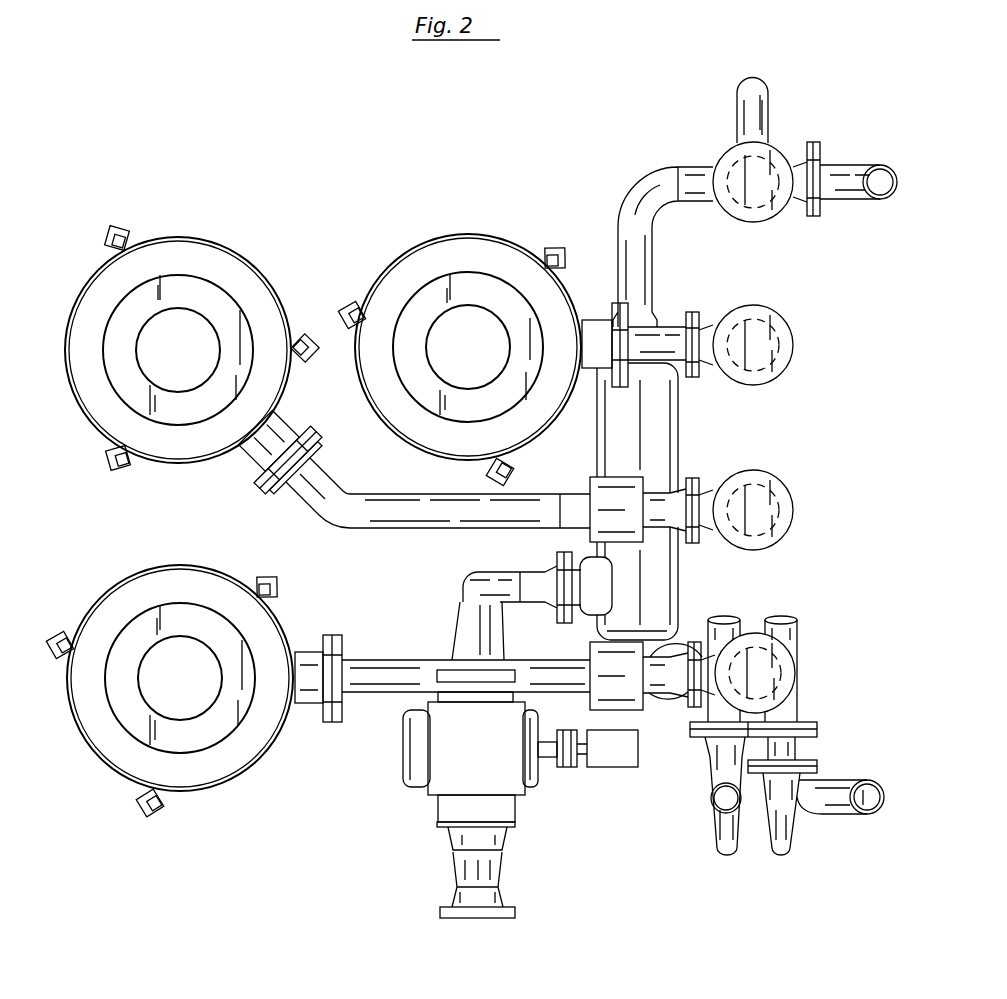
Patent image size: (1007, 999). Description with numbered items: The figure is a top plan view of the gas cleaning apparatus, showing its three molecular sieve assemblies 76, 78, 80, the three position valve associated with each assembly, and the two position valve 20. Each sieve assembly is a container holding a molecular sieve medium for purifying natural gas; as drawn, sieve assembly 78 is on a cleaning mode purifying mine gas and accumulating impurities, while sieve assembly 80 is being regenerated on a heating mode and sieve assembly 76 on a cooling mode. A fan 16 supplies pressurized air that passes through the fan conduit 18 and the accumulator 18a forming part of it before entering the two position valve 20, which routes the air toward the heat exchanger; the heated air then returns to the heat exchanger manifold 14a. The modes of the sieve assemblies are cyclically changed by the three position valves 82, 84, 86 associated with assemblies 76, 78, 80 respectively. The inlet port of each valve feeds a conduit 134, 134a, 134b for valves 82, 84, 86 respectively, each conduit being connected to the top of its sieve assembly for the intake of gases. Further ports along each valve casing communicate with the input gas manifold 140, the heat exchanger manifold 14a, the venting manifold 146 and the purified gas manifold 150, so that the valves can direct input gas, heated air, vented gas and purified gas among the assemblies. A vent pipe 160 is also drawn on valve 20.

The fan 16 is at (442, 782).
The fan conduit 18 is at (690, 188).
The accumulator 18a is at (657, 573).
The two position valve 20 is at (770, 213).
The molecular sieve assembly 76 is at (193, 567).
The molecular sieve assembly 78 is at (221, 242).
The molecular sieve assembly 80 is at (477, 237).
The three position valve 82 is at (790, 660).
The three position valve 84 is at (783, 525).
The three position valve 86 is at (782, 368).
The conduit 134 is at (413, 665).
The conduit 134a is at (412, 502).
The conduit 134b is at (593, 327).
The input gas manifold 140 is at (790, 832).
The heat exchanger manifold 14a is at (710, 797).
The venting manifold 146 is at (841, 787).
The purified gas manifold 150 is at (720, 838).
The vent pipe 160 is at (757, 102).